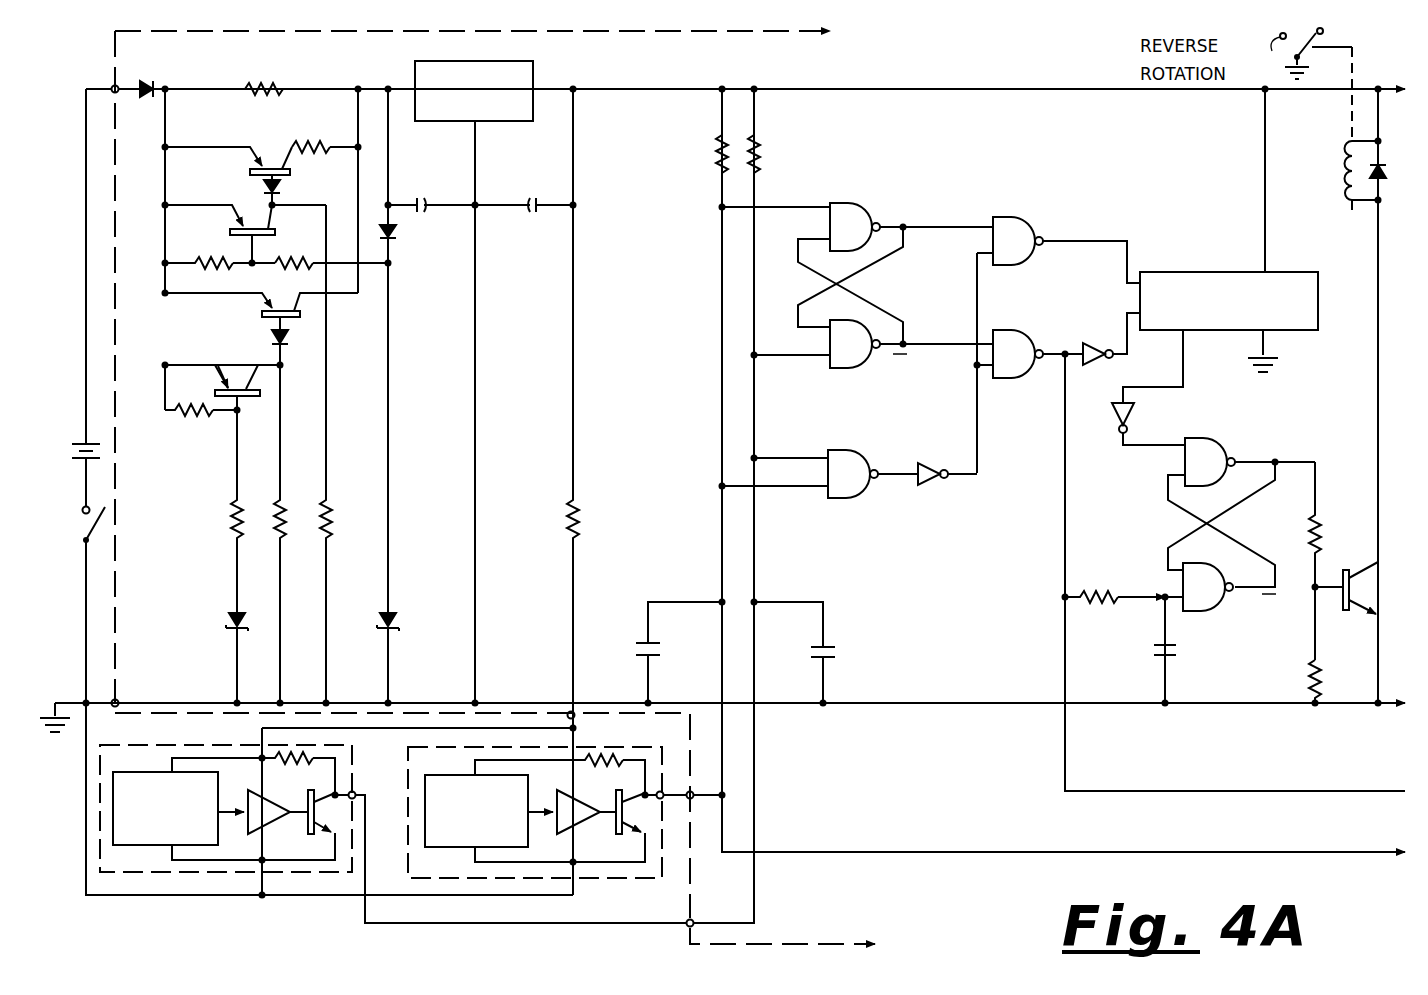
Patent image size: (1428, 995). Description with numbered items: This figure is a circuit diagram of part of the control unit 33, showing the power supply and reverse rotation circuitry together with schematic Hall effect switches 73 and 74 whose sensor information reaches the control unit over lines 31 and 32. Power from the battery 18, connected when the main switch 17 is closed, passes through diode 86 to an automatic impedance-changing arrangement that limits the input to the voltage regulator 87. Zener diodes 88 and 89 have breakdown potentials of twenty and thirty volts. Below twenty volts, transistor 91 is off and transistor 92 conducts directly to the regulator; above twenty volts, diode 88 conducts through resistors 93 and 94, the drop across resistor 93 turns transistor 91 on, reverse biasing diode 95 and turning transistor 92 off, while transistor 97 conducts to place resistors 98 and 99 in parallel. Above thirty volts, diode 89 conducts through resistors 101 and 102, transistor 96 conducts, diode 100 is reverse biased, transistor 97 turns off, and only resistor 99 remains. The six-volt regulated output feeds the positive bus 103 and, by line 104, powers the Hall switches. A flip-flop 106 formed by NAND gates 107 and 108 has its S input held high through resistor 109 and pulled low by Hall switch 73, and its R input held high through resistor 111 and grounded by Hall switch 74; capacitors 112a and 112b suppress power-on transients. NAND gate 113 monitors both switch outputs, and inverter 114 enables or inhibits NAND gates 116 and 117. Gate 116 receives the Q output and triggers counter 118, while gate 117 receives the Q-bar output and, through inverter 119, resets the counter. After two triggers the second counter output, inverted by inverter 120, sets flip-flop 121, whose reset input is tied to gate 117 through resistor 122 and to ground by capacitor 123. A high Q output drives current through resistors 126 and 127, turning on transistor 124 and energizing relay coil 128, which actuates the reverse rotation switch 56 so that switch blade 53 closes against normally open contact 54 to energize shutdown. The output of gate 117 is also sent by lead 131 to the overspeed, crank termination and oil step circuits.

The main switch 17 is at (85, 528).
The battery 18 is at (80, 442).
The line 31 is at (705, 798).
The line 32 is at (365, 905).
The control unit 33 is at (622, 38).
The switch blade 53 is at (1318, 61).
The normally open contact 54 is at (1265, 52).
The reverse rotation switch 56 is at (1333, 36).
The Hall effect switch 73 is at (722, 280).
The Hall effect switch 74 is at (754, 392).
The diode 86 is at (148, 80).
The voltage regulator 87 is at (486, 124).
The zener diode 88 is at (226, 623).
The zener diode 89 is at (395, 624).
The transistor 91 is at (238, 383).
The transistor 92 is at (260, 312).
The resistor 93 is at (197, 414).
The resistor 94 is at (233, 525).
The diode 95 is at (290, 340).
The transistor 96 is at (228, 232).
The transistor 97 is at (250, 173).
The resistor 98 is at (326, 142).
The resistor 99 is at (270, 84).
The diode 100 is at (287, 188).
The resistor 101 is at (200, 261).
The resistor 102 is at (295, 260).
The positive bus 103 is at (950, 88).
The line 104 is at (573, 335).
The flip-flop 106 is at (856, 268).
The NAND gate 107 is at (826, 228).
The NAND gate 108 is at (826, 344).
The resistor 109 is at (716, 156).
The resistor 111 is at (760, 156).
The capacitor 112a is at (643, 642).
The capacitor 112b is at (835, 654).
The NAND gate 113 is at (846, 498).
The inverter 114 is at (934, 485).
The NAND gate 116 is at (1015, 216).
The NAND gate 117 is at (1017, 332).
The counter 118 is at (1222, 270).
The inverter 119 is at (1090, 340).
The inverter 120 is at (1135, 414).
The flip-flop 121 is at (1218, 434).
The resistor 122 is at (1103, 602).
The capacitor 123 is at (1175, 650).
The transistor 124 is at (1325, 570).
The resistor 126 is at (1310, 530).
The resistor 127 is at (1310, 680).
The relay coil 128 is at (1345, 170).
The lead 131 is at (1190, 791).